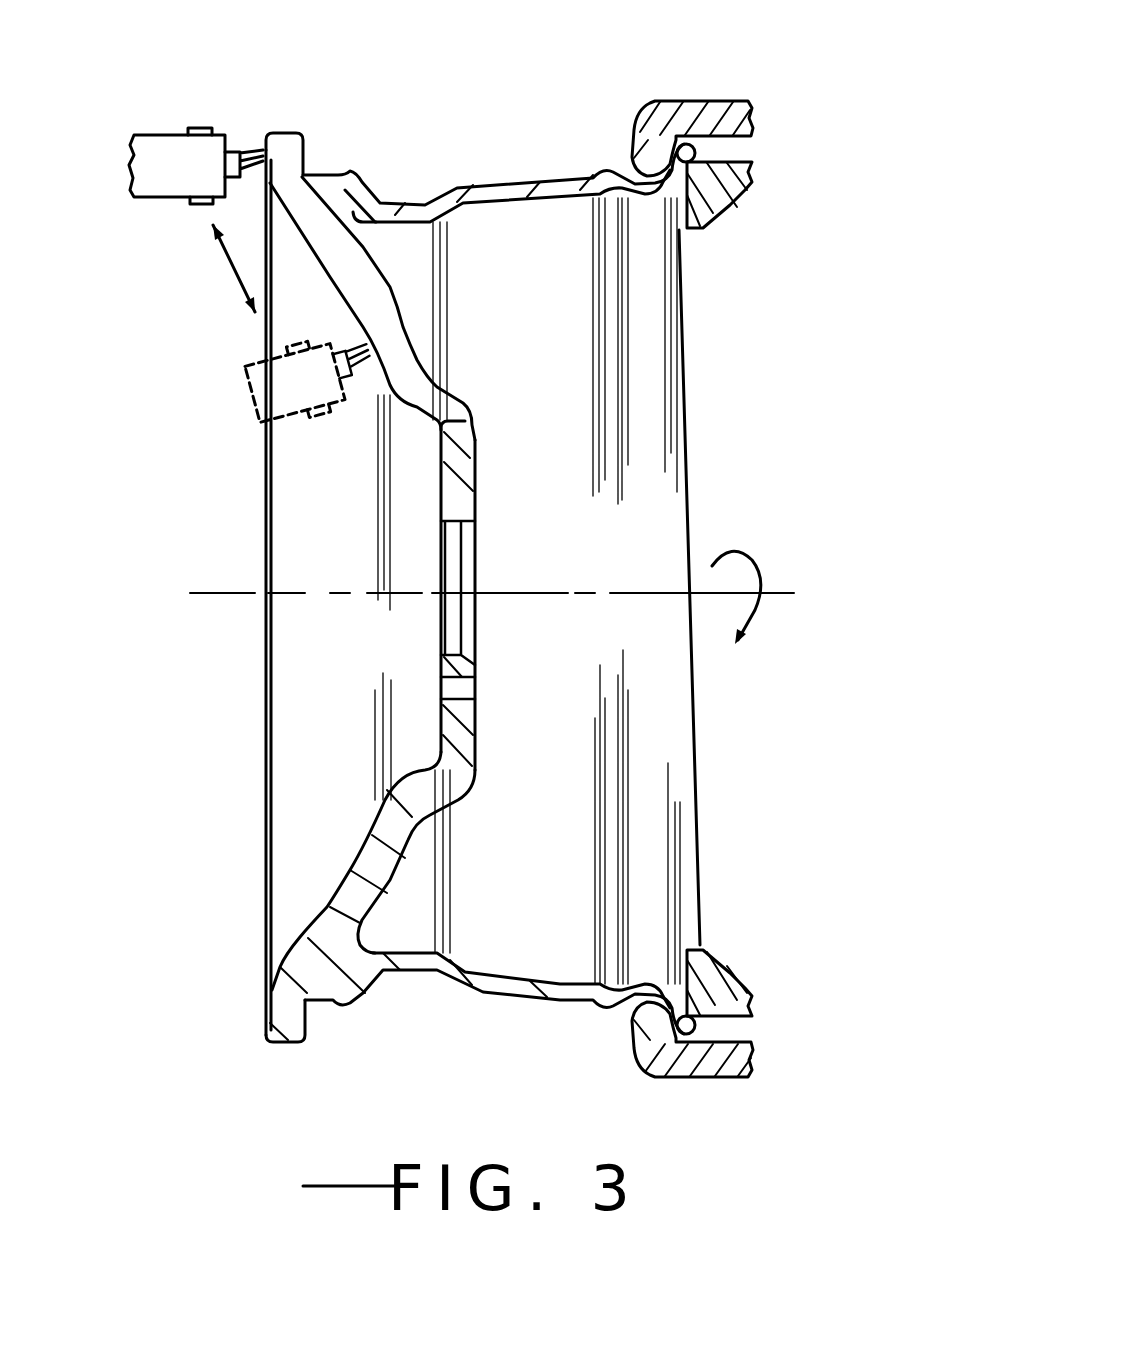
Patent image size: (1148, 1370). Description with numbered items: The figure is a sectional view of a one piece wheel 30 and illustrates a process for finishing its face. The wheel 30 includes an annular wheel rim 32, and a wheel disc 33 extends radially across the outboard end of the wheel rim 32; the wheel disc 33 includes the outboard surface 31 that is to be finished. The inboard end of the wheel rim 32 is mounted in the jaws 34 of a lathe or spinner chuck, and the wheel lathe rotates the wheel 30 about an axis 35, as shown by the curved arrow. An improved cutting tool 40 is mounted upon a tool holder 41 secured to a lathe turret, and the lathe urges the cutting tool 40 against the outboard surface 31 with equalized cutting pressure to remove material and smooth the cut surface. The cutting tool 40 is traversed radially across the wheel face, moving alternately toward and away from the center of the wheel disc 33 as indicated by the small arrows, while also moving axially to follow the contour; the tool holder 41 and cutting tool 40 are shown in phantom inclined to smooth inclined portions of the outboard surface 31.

The wheel 30 is at (417, 143).
The outboard surface 31 is at (377, 413).
The wheel rim 32 is at (478, 181).
The wheel disc 33 is at (455, 388).
The jaws 34 is at (683, 100).
The axis 35 is at (774, 593).
The cutting tool 40 is at (237, 157).
The tool holder 41 is at (155, 135).